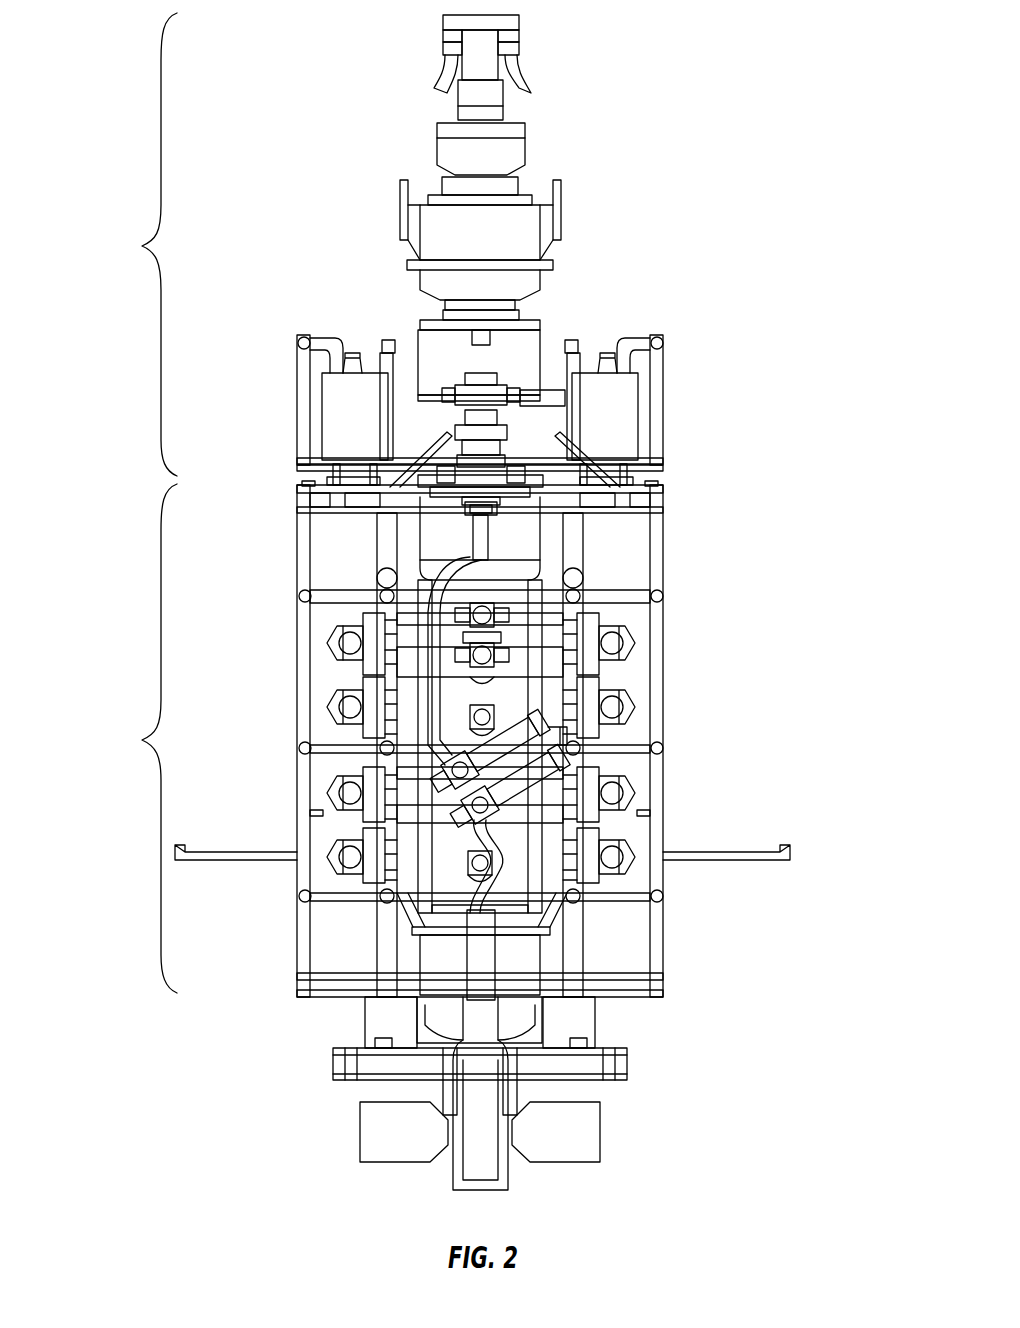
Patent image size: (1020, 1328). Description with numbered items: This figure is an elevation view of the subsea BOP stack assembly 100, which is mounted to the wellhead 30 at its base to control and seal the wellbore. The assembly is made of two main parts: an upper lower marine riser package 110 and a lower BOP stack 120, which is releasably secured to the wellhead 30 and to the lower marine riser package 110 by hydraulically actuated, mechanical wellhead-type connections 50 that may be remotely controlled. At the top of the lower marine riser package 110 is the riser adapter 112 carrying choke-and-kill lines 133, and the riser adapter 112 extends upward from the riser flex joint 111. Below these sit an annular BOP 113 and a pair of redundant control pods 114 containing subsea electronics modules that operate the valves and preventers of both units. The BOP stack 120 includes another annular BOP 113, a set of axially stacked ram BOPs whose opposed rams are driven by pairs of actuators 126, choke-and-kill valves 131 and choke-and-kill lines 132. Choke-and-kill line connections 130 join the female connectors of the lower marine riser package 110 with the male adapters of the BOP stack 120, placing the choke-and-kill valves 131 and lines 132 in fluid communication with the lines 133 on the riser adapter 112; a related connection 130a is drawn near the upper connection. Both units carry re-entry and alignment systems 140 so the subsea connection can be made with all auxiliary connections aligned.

The BOP stack assembly 100 is at (108, 489).
The lower marine riser package 110 is at (137, 244).
The BOP stack 120 is at (137, 738).
The choke-and-kill lines 133 is at (518, 70).
The riser adapter 112 is at (490, 98).
The riser flex joint 111 is at (518, 152).
The annular BOP 113 is at (527, 232).
The connection 50 is at (520, 335).
The control pod 114 is at (335, 412).
The upper valve 130a is at (430, 450).
The re-entry and alignment system 140 is at (615, 462).
The actuator 126 is at (340, 642).
The choke-and-kill valve 131 is at (400, 620).
The choke-and-kill line 132 is at (483, 530).
The choke-and-kill line connection 130 is at (495, 945).
The wellhead 30 is at (455, 1068).